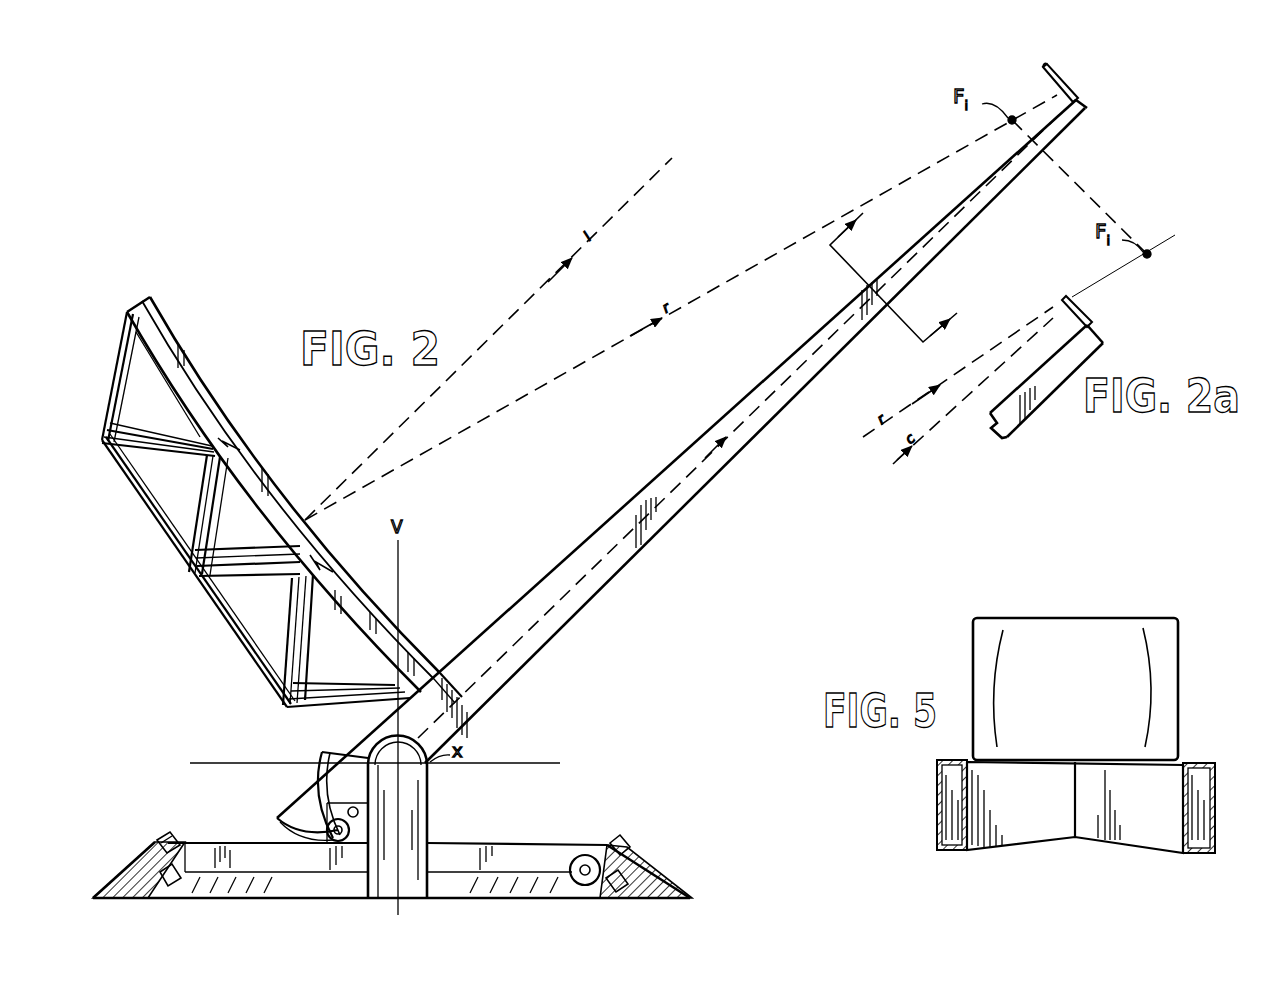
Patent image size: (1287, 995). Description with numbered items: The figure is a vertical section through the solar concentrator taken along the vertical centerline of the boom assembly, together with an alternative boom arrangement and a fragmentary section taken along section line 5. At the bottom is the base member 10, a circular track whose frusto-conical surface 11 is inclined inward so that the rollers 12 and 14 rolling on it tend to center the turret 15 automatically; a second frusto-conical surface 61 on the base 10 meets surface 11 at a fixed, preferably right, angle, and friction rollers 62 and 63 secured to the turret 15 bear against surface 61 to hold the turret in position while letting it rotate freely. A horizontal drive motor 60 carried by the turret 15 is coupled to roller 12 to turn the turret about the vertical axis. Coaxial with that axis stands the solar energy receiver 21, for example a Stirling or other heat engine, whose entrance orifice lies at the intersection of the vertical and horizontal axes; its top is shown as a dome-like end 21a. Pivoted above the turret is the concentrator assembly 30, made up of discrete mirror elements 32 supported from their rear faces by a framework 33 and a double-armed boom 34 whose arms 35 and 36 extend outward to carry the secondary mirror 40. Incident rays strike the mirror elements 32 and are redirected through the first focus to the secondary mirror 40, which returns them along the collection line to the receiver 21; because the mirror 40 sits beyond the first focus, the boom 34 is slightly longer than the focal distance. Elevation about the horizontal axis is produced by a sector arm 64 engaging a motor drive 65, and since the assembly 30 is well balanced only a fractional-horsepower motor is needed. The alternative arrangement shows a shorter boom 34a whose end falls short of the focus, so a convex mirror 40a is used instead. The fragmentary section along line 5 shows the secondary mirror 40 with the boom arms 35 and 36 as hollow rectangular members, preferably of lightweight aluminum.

In FIG. 2, the section line 5— 5 is at (900, 271).
In FIG. 2, the base member 10 is at (108, 888).
In FIG. 2, the frusto-conical surface 11 is at (210, 843).
In FIG. 2, the roller 12 is at (625, 845).
In FIG. 2, the roller 14 is at (165, 838).
In FIG. 2, the turret 15 is at (603, 843).
In FIG. 2, the solar energy receiver 21 is at (428, 793).
In FIG. 2, the ball top of pedestal 21a is at (375, 750).
In FIG. 2, the concentrator assembly 30 is at (444, 690).
In FIG. 2, the mirror elements 32 is at (236, 440).
In FIG. 2, the framework 33 is at (100, 438).
In FIG. 2, the double-armed boom 34 is at (560, 617).
In FIG. 2A, the boom 34a is at (1022, 395).
In FIG. 5, the boom arm 35 is at (1216, 785).
In FIG. 2, the boom arm 36 is at (680, 505).
In FIG. 5, the boom arm 36 is at (938, 800).
In FIG. 2, the secondary mirror 40 is at (1065, 88).
In FIG. 5, the secondary mirror 40 is at (1178, 644).
In FIG. 2A, the convex secondary mirror 40a is at (1078, 314).
In FIG. 2, the drive motor 60 is at (585, 855).
In FIG. 2, the second frusto-conical surface 61 is at (498, 897).
In FIG. 2, the friction roller 62 is at (175, 886).
In FIG. 2, the friction roller 63 is at (612, 892).
In FIG. 2, the sector arm 64 is at (320, 756).
In FIG. 2, the motor drive 65 is at (300, 830).